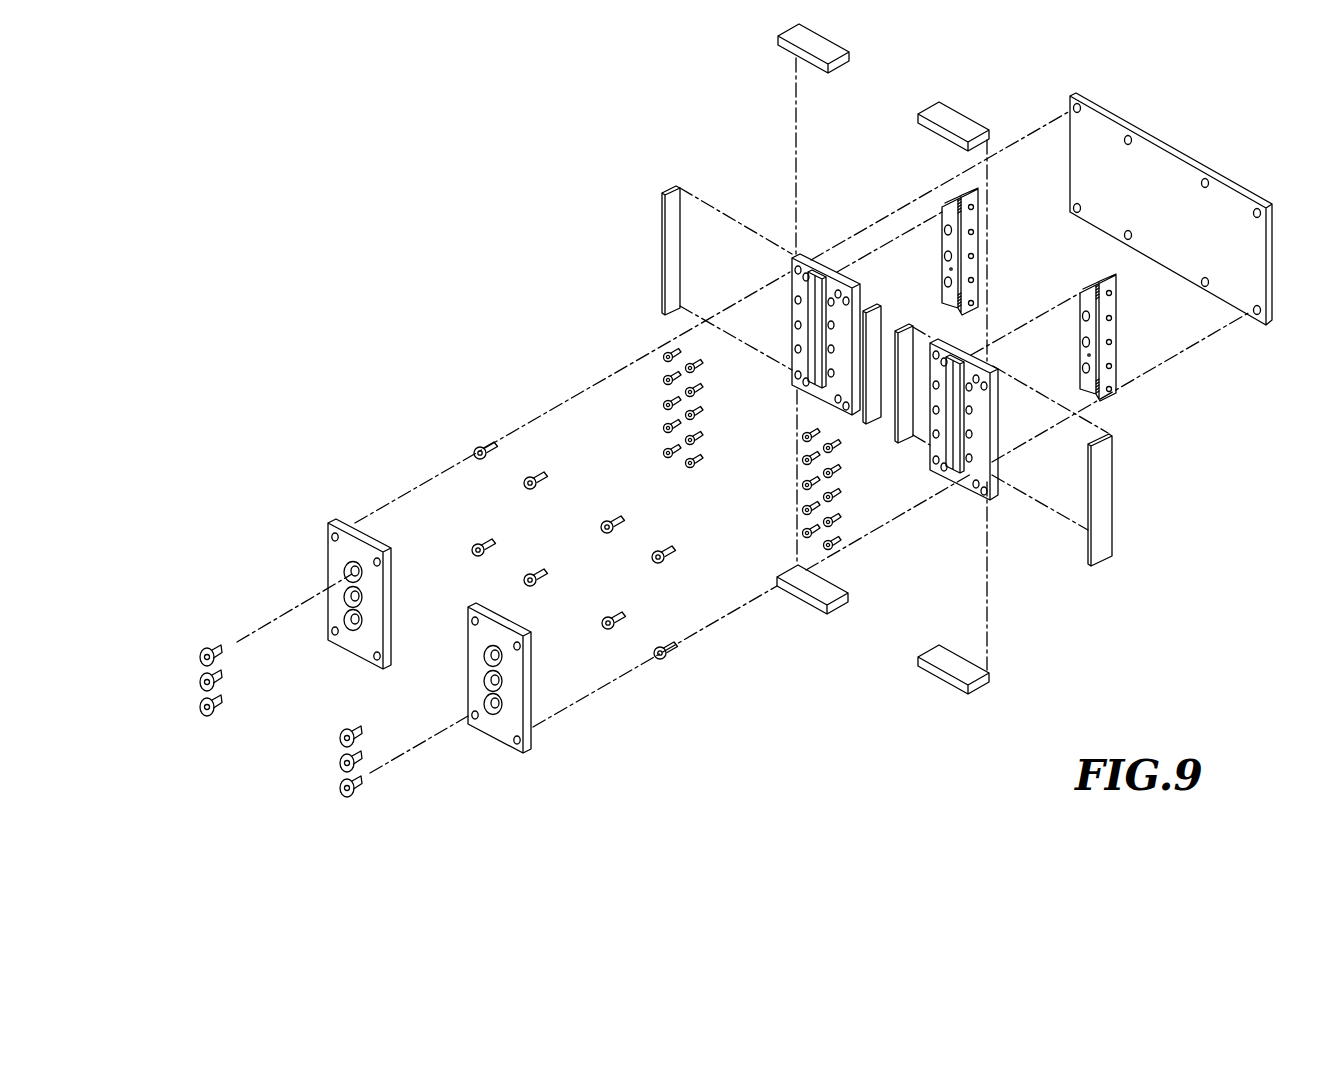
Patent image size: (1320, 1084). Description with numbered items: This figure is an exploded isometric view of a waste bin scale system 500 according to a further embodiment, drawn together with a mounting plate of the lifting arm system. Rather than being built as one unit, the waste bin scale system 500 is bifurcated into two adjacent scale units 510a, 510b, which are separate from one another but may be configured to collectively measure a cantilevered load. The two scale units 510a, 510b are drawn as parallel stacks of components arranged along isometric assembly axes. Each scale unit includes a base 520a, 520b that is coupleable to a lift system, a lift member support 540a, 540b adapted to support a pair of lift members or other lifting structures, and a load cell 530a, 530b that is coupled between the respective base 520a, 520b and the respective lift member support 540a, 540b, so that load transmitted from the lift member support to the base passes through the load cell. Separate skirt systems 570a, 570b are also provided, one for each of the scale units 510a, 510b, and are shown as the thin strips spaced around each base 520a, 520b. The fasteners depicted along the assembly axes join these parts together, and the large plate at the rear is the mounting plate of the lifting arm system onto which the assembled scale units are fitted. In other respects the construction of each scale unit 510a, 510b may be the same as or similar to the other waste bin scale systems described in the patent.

The waste bin scale system 500 is at (380, 192).
The scale unit 510a is at (195, 613).
The scale unit 510b is at (335, 695).
The base 520a is at (798, 346).
The base 520b is at (938, 434).
The load cell 530a is at (972, 228).
The load cell 530b is at (1118, 317).
The lift member support 540a is at (342, 573).
The lift member support 540b is at (483, 686).
The skirt system 570a is at (796, 42).
The skirt system 570b is at (950, 122).